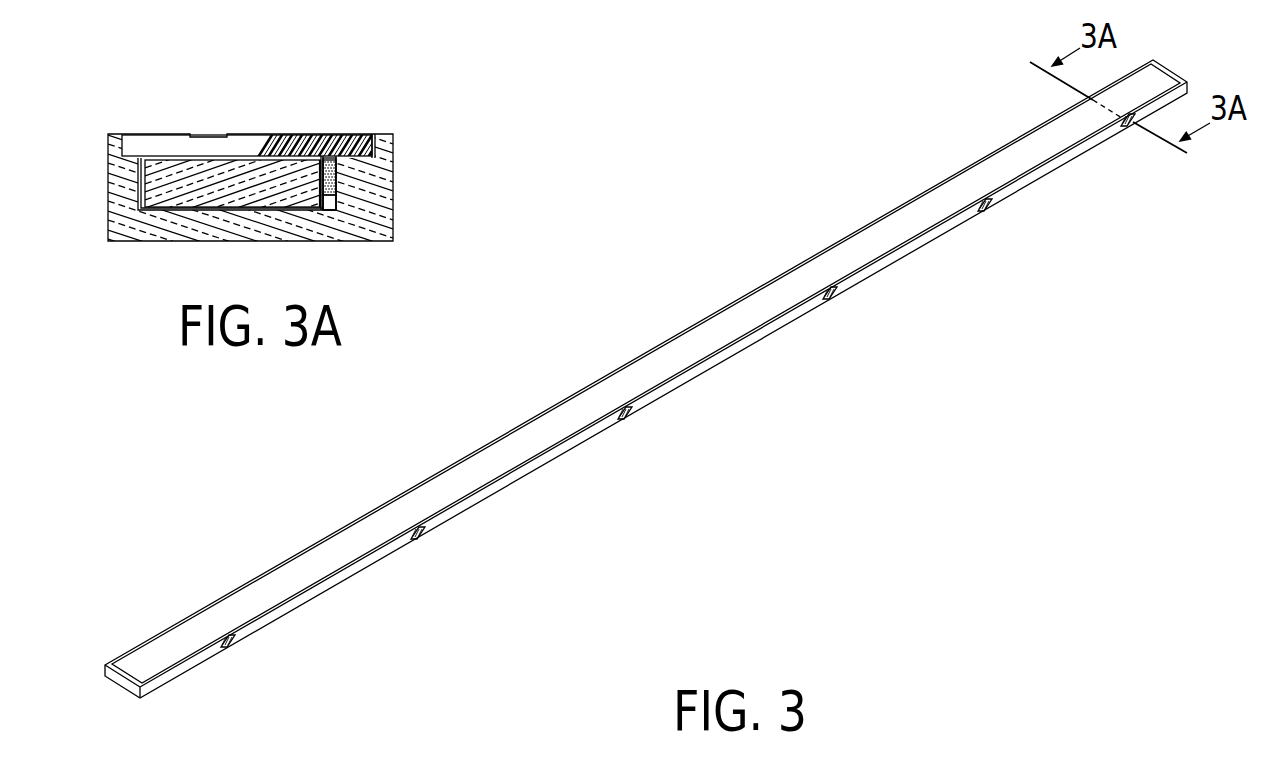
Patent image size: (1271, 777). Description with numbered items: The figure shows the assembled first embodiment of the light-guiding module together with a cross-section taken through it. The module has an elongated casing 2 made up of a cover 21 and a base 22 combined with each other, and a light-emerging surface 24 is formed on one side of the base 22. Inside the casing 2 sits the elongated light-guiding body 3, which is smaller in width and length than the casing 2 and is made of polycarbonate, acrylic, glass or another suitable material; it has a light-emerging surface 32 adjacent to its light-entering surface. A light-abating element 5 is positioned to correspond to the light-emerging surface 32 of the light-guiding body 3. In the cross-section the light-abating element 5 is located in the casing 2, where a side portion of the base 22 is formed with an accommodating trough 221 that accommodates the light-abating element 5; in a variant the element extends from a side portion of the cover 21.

In FIG. 3A, the casing 2 is at (108, 132).
In FIG. 3, the casing 2 is at (679, 368).
In FIG. 3A, the cover 21 is at (258, 142).
In FIG. 3, the cover 21 is at (548, 425).
In FIG. 3A, the base 22 is at (112, 222).
In FIG. 3, the base 22 is at (1170, 73).
In FIG. 3A, the light-emerging surface 24 is at (338, 163).
In FIG. 3, the light-emerging surface 24 is at (835, 288).
In FIG. 3A, the accommodating trough 221 is at (330, 200).
In FIG. 3A, the light-guiding body 3 is at (215, 183).
In FIG. 3A, the light-emerging surface 32 is at (317, 183).
In FIG. 3A, the light-abating element 5 is at (336, 175).